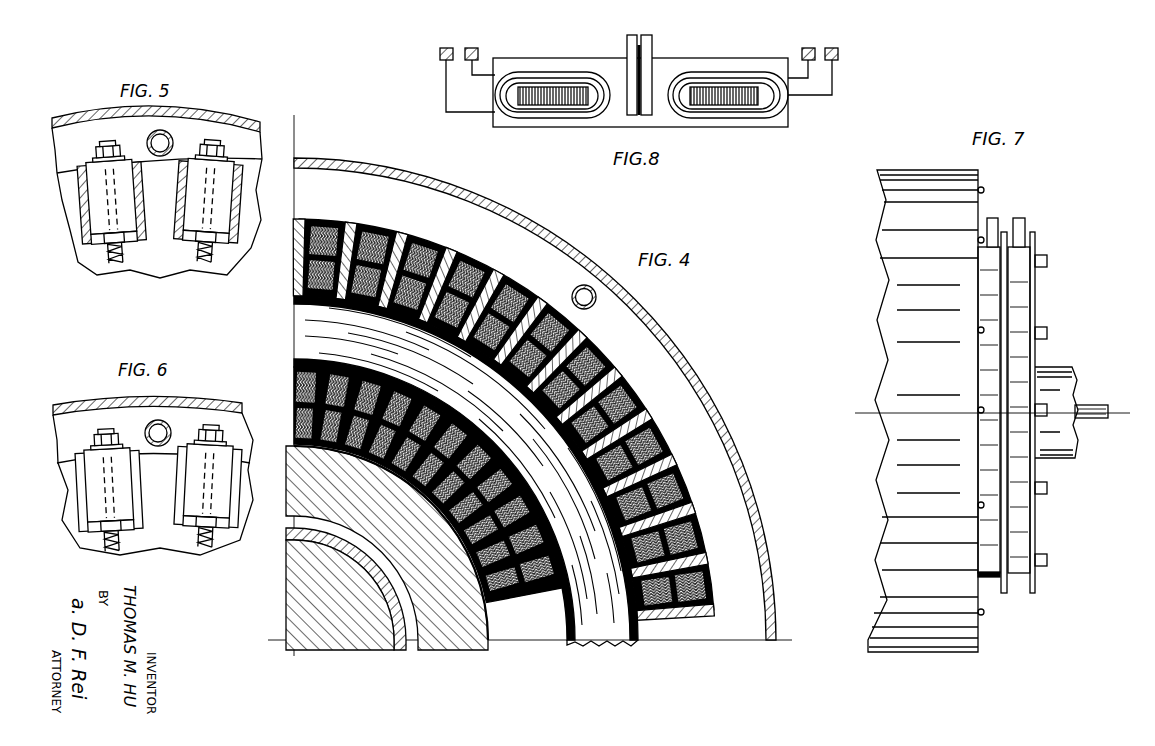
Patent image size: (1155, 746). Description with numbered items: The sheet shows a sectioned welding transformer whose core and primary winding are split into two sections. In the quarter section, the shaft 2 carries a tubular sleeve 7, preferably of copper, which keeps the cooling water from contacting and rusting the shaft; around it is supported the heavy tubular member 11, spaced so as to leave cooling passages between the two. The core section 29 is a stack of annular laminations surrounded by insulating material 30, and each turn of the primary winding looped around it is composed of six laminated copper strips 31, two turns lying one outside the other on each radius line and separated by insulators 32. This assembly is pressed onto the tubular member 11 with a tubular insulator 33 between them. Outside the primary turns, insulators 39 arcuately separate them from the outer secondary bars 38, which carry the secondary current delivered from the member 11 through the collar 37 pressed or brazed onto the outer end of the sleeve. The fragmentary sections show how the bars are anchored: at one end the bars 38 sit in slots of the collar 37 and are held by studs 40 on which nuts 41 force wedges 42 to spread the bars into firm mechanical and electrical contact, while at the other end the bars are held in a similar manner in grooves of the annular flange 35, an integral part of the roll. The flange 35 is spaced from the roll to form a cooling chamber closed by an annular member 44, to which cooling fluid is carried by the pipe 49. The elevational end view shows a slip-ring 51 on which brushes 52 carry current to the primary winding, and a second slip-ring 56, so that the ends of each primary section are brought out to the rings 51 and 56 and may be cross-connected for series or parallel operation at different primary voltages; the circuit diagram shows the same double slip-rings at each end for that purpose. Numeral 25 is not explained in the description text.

In FIG. 4, the shaft 2 is at (348, 650).
In FIG. 7, the shaft 2 is at (1085, 369).
In FIG. 4, the tubular sleeve 7 is at (398, 648).
In FIG. 4, the tubular member 11 is at (455, 648).
In FIG. 4, the housing shell 25 is at (458, 184).
In FIG. 5, the housing shell 25 is at (218, 110).
In FIG. 6, the housing shell 25 is at (190, 396).
In FIG. 4, the core section 29 is at (600, 645).
In FIG. 4, the insulating material 30 is at (570, 645).
In FIG. 4, the laminated strips 31 is at (510, 607).
In FIG. 4, the insulators 32 is at (712, 574).
In FIG. 4, the tubular insulator 33 is at (492, 647).
In FIG. 5, the annular flange 35 is at (130, 284).
In FIG. 6, the collar 37 is at (165, 560).
In FIG. 4, the outer secondary bars 38 is at (500, 270).
In FIG. 6, the outer secondary bars 38 is at (154, 482).
In FIG. 4, the insulators 39 is at (610, 372).
In FIG. 5, the studs 40 is at (222, 146).
In FIG. 6, the studs 40 is at (110, 430).
In FIG. 5, the nuts 41 is at (112, 147).
In FIG. 6, the nuts 41 is at (95, 437).
In FIG. 5, the wedges 42 is at (245, 162).
In FIG. 6, the wedges 42 is at (86, 453).
In FIG. 5, the annular member 44 is at (262, 128).
In FIG. 4, the pipe 49 is at (600, 297).
In FIG. 5, the pipe 49 is at (174, 142).
In FIG. 6, the pipe 49 is at (173, 430).
In FIG. 7, the slip-ring 51 is at (990, 580).
In FIG. 8, the slip-ring 51 is at (478, 52).
In FIG. 7, the brushes 52 is at (1000, 216).
In FIG. 7, the slip-ring 56 is at (1015, 580).
In FIG. 8, the slip-ring 56 is at (440, 52).